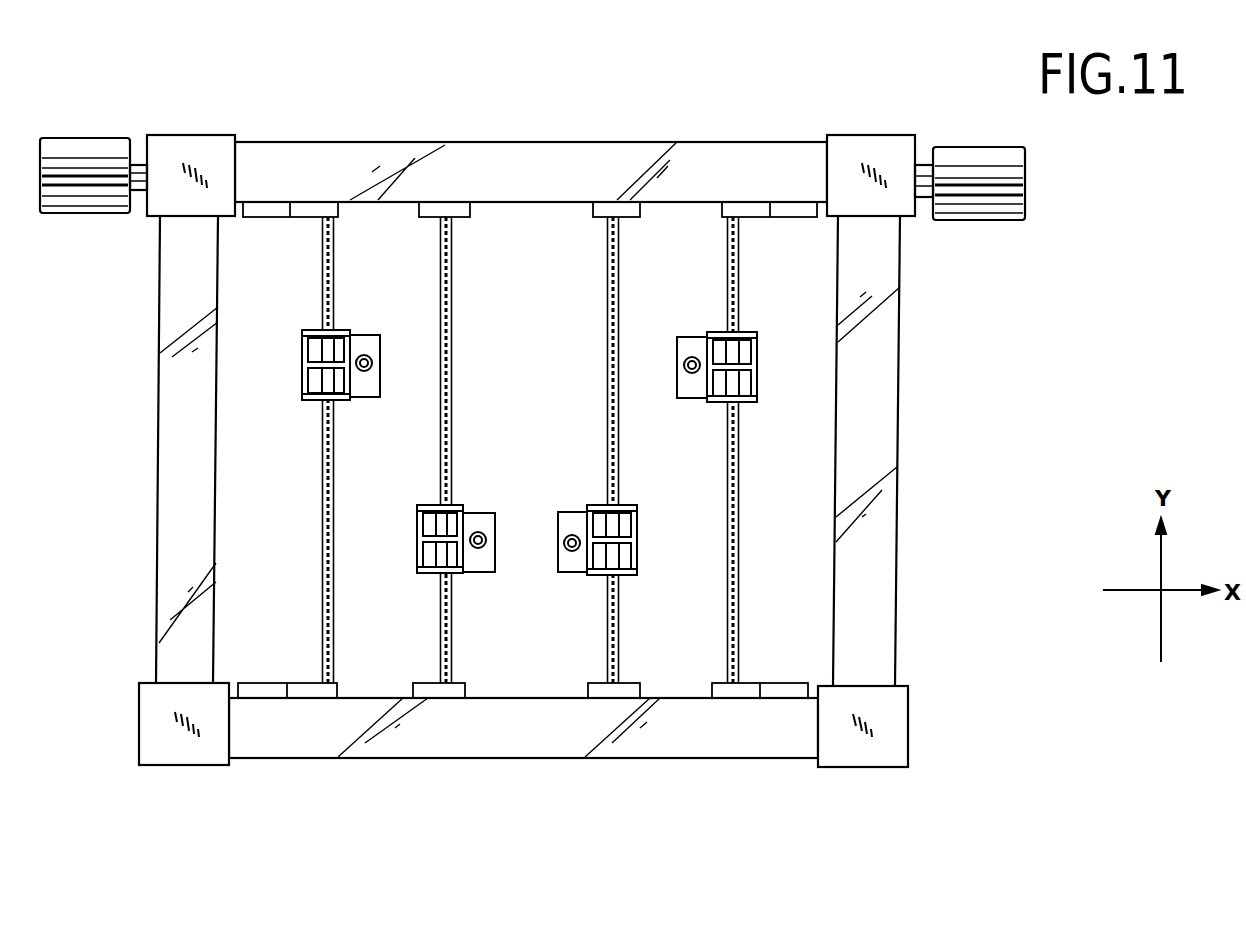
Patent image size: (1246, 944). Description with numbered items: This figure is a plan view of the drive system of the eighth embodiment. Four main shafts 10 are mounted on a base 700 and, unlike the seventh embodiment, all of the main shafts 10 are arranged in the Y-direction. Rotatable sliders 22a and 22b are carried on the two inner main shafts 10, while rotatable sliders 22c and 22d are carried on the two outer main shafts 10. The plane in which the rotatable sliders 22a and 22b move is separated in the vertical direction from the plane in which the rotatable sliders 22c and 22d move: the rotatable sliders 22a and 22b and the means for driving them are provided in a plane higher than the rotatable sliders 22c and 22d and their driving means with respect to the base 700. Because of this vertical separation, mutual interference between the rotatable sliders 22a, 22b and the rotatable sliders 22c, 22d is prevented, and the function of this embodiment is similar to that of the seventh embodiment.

The main shaft 10 is at (322, 488).
The rotatable slider 22a is at (478, 502).
The rotatable slider 22b is at (648, 506).
The rotatable slider 22c is at (290, 379).
The rotatable slider 22d is at (768, 367).
The base 700 is at (733, 764).